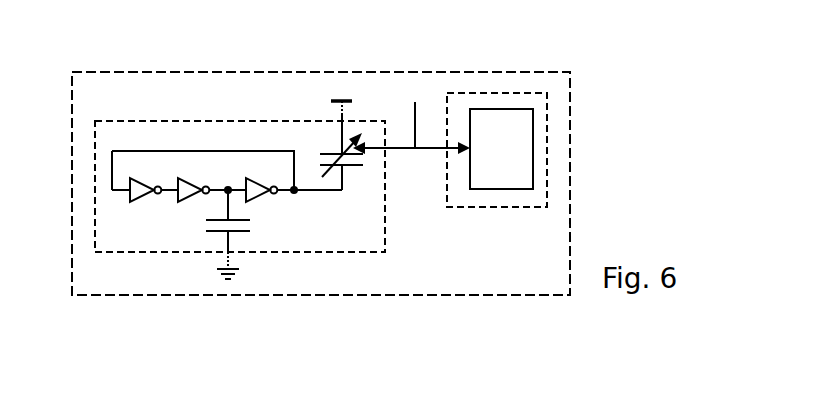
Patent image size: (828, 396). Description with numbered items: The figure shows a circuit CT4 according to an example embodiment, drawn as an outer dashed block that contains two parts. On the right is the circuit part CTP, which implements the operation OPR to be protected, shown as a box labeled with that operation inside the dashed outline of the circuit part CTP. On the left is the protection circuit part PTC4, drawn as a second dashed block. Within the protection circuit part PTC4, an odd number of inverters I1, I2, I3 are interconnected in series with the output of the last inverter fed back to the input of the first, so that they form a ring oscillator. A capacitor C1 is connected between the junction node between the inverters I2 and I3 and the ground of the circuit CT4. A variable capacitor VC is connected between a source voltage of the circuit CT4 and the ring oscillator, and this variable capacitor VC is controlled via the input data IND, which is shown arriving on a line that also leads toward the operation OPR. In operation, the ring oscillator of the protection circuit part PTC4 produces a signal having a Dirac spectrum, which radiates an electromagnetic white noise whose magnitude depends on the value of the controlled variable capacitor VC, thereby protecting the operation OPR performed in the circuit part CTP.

The circuit CT4 is at (569, 72).
The protection circuit part PTC4 is at (385, 233).
The circuit part CTP is at (547, 93).
The operation OPR is at (522, 156).
The inverter I1 is at (129, 203).
The inverter I2 is at (177, 203).
The inverter I3 is at (262, 198).
The capacitor C1 is at (250, 230).
The variable capacitor VC is at (364, 163).
The input data IND is at (411, 117).